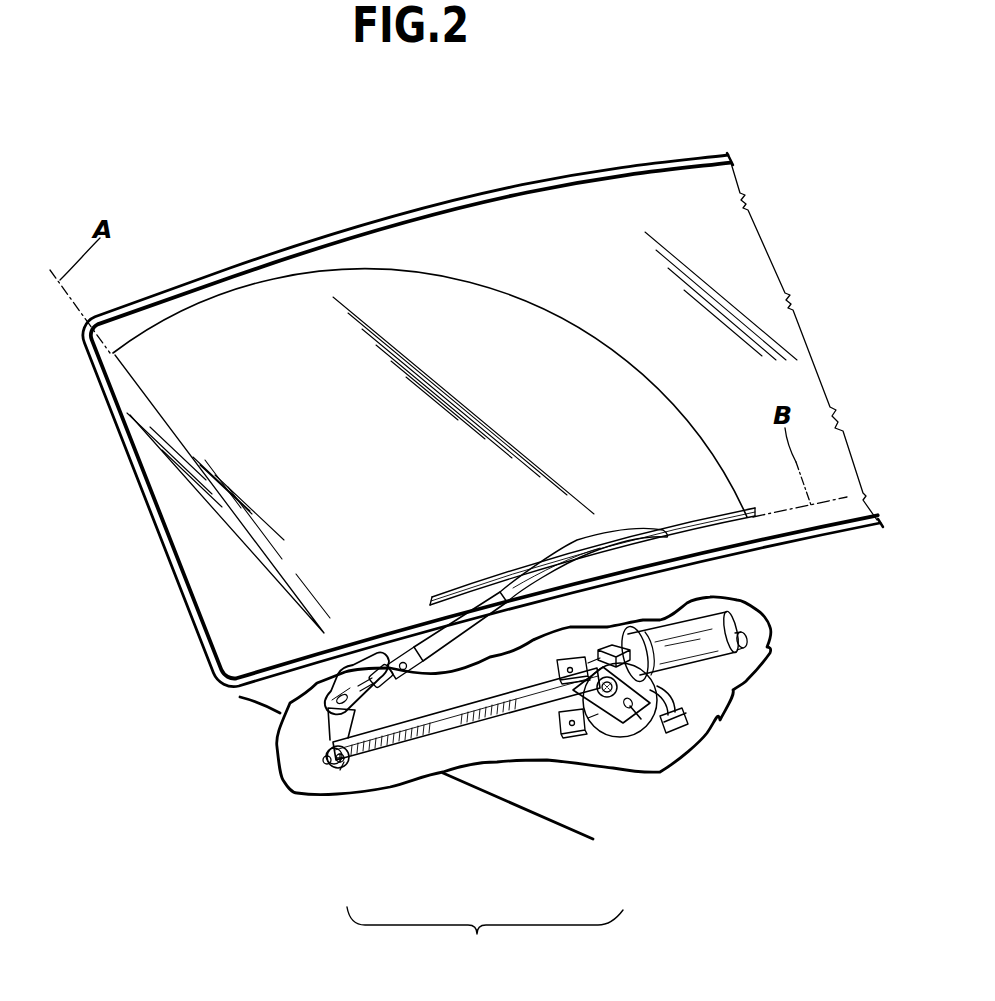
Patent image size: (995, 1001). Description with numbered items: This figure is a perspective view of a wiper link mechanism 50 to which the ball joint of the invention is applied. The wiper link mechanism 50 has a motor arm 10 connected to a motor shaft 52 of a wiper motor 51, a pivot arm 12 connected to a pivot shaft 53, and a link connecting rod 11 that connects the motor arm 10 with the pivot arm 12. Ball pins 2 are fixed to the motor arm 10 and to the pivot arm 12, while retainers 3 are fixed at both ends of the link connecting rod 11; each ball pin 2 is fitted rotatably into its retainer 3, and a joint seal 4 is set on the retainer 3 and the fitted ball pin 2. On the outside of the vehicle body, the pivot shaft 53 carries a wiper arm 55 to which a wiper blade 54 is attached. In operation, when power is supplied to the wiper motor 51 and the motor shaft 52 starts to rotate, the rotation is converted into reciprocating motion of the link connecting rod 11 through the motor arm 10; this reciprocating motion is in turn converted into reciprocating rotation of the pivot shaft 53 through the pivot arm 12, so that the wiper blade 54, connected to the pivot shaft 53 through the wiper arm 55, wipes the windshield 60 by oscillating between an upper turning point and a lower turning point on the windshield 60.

The ball pin 2 is at (340, 770).
The retainer 3 is at (343, 750).
The joint seal 4 is at (600, 686).
The motor arm 10 is at (616, 710).
The link connecting rod 11 is at (488, 720).
The pivot arm 12 is at (357, 730).
The wiper link mechanism 50 is at (485, 944).
The wiper motor 51 is at (713, 628).
The motor shaft 52 is at (630, 700).
The pivot shaft 53 is at (340, 688).
The wiper blade 54 is at (688, 520).
The wiper arm 55 is at (413, 652).
The windshield 60 is at (582, 218).